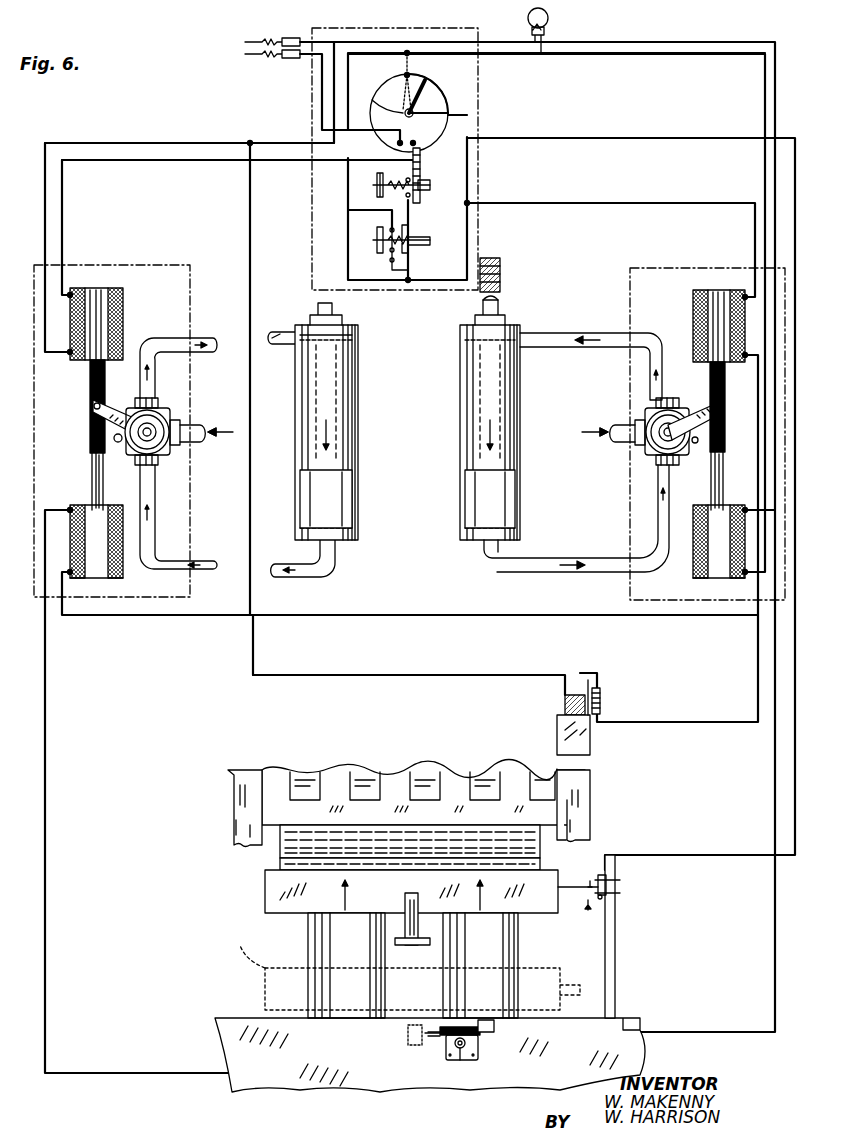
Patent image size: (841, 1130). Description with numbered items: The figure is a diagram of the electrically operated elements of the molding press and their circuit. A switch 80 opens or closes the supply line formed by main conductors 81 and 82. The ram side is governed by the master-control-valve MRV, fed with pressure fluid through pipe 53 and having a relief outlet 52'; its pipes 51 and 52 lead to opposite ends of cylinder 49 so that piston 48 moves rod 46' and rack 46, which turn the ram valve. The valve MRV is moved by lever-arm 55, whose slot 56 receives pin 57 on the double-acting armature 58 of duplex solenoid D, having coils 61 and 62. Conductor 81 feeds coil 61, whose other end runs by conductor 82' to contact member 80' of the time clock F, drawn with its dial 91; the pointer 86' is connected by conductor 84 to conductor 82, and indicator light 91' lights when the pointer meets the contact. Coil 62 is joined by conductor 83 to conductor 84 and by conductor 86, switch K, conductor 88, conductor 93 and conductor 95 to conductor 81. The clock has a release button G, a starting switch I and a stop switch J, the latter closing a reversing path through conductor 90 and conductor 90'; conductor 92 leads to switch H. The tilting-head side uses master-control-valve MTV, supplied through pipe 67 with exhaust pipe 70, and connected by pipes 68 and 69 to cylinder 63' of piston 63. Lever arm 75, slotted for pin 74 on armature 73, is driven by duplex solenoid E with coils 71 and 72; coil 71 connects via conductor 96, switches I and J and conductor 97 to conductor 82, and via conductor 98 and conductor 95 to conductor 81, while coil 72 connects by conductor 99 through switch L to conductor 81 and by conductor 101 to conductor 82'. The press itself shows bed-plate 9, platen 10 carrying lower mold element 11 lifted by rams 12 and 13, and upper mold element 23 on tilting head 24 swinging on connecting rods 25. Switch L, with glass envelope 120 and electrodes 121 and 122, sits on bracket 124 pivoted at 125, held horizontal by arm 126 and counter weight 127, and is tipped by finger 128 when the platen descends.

The switch 80 is at (272, 69).
The main conductor 81 is at (308, 42).
The main conductor 82 is at (319, 92).
The conductor 82' is at (585, 313).
The indicator light 91' is at (558, 31).
The conductor 95 is at (278, 142).
The conductor 96 is at (64, 220).
The conductor 98 is at (45, 247).
The conductor 99 is at (46, 748).
The conductor 101 is at (162, 616).
The conductor 93 is at (251, 398).
The conductor 97 is at (312, 232).
The timer dial 91 is at (419, 105).
The contact member 80' is at (386, 81).
The pointer 86' is at (380, 99).
The conductor 92 is at (458, 142).
The conductor 84 is at (480, 166).
The conductor 83 is at (735, 205).
The conductor 86 is at (668, 538).
The release button G is at (398, 152).
The starting switch I is at (420, 192).
The stop switch J is at (425, 246).
The conductor 90' is at (367, 240).
The conductor 90 is at (378, 264).
The time clock F is at (480, 102).
The duplex solenoid E is at (128, 292).
The coil 71 is at (124, 325).
The coil 72 is at (74, 510).
The pin 74 is at (90, 400).
The armature 73 is at (92, 460).
The lever arm 75 is at (116, 402).
The master-control-valve MTV is at (168, 452).
The pipe 67 is at (198, 442).
The exhaust pipe 70 is at (118, 445).
The pipe 68 is at (205, 338).
The pipe 69 is at (198, 560).
The piston 63 is at (342, 421).
The cylinder 63' is at (349, 463).
The cylinder 49 is at (520, 410).
The piston 48 is at (515, 492).
The rack 46 is at (508, 275).
The rod 46' is at (514, 300).
The pipe 52 is at (591, 351).
The pipe 51 is at (570, 566).
The master-control-valve MRV is at (646, 452).
The pipe 53 is at (620, 425).
The relief outlet 52' is at (696, 455).
The lever-arm 55 is at (697, 410).
The slot 56 is at (726, 395).
The pin 57 is at (726, 430).
The armature 58 is at (715, 490).
The duplex solenoid D is at (690, 292).
The coil 62 is at (693, 320).
The coil 61 is at (695, 580).
The switch K is at (421, 715).
The contact K' is at (611, 697).
The conductor 88 is at (524, 675).
The tilting head 24 is at (545, 808).
The connecting rods 25 is at (238, 798).
The upper mold element 23 is at (288, 840).
The lower mold element 11 is at (285, 862).
The platen 10 is at (280, 903).
The ram 12 is at (308, 952).
The ram 13 is at (520, 956).
The tipping finger 128 is at (425, 945).
The counter weight 127 is at (545, 1005).
The bed-plate 9 is at (215, 1033).
The switch H is at (618, 878).
The switch mechanism L is at (405, 1038).
The bracket 124 is at (470, 1052).
The pivot 125 is at (460, 1062).
The arm 126 is at (440, 1040).
The glass envelope 120 is at (450, 1027).
The electrode 121 is at (435, 1032).
The electrode 122 is at (483, 1022).